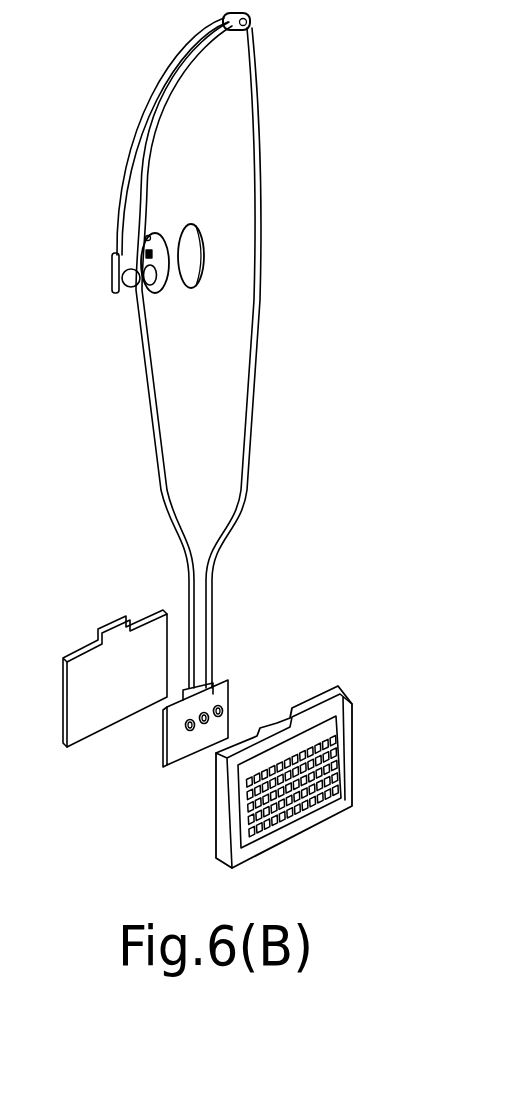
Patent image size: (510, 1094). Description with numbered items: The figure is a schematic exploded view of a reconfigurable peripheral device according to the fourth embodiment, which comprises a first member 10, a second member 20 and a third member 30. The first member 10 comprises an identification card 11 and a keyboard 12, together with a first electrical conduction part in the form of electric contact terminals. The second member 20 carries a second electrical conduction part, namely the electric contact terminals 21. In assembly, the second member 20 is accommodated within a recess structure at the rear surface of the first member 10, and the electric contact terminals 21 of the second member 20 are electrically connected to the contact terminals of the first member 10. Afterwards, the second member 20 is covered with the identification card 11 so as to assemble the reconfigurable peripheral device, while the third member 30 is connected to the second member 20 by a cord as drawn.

The first member 10 is at (318, 712).
The identification card 11 is at (93, 672).
The keyboard 12 is at (344, 758).
The second member 20 is at (182, 742).
The electric contact terminals 21 is at (219, 707).
The third member 30 is at (97, 252).